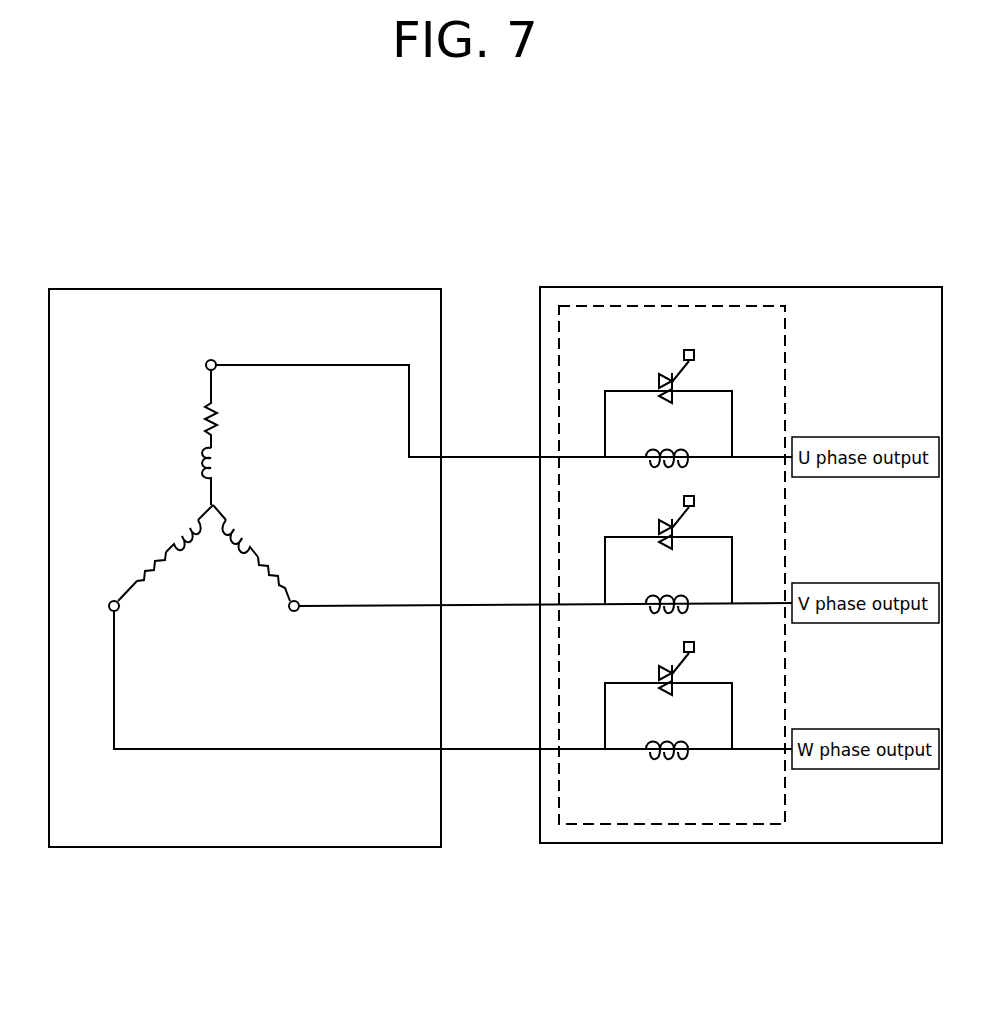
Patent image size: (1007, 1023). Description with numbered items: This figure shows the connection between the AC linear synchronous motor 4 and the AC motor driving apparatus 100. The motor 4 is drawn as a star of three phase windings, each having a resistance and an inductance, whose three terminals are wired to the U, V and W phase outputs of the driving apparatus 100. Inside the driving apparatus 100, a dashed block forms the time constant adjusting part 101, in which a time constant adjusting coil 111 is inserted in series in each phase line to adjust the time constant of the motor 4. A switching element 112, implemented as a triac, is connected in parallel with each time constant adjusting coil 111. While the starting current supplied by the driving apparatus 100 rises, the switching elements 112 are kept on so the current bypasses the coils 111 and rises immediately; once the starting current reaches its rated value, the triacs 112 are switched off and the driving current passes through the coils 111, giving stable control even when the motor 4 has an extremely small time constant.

The AC linear synchronous motor 4 is at (270, 289).
The AC motor driving apparatus 100 is at (745, 287).
The time constant adjusting part 101 is at (785, 381).
The time constant adjusting coil 111 is at (690, 459).
The switching element 112 is at (657, 387).